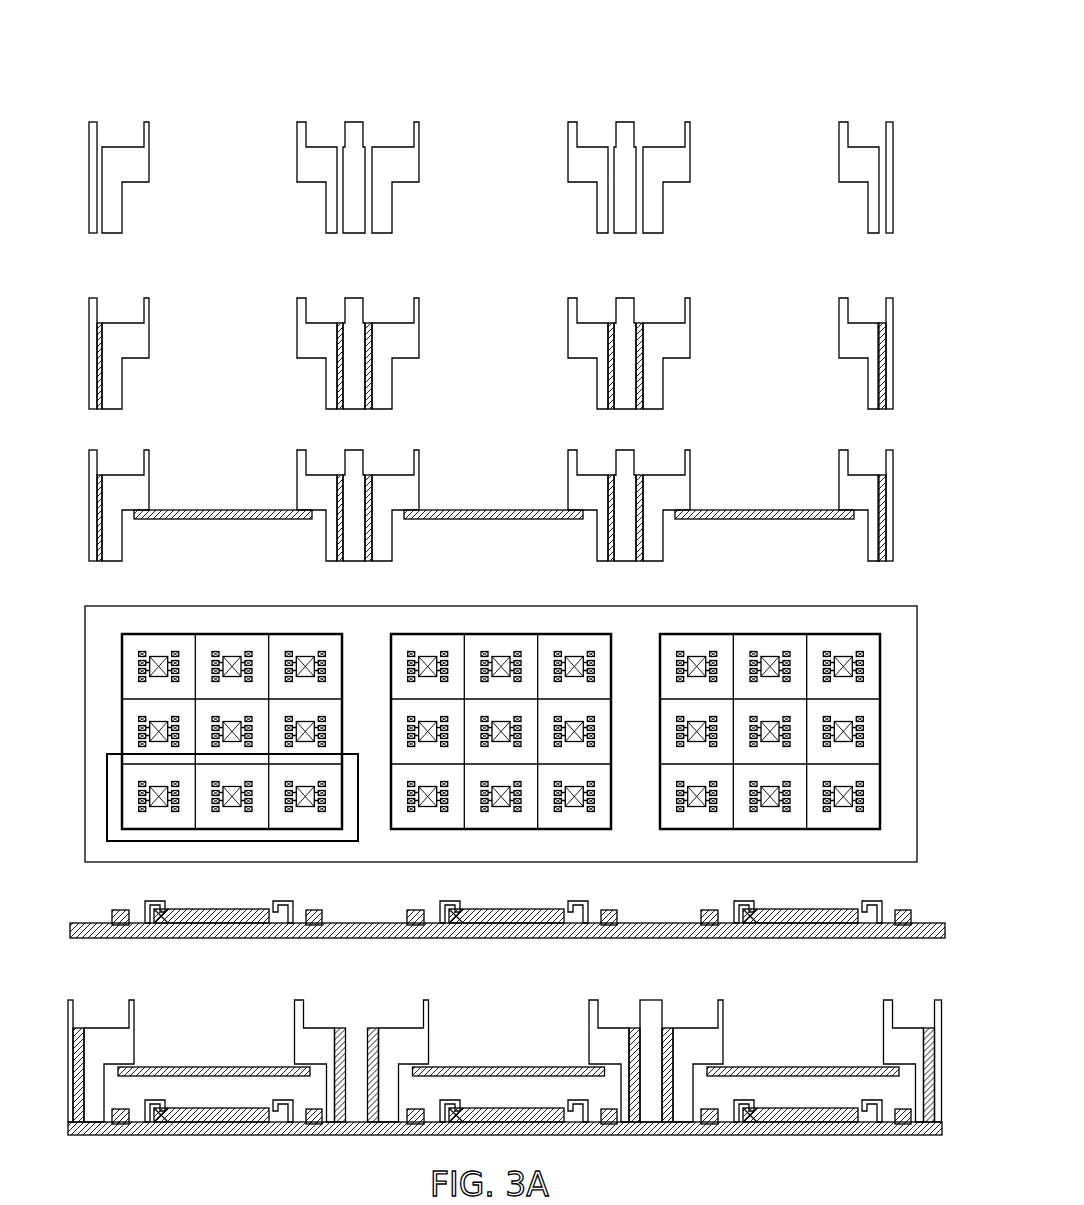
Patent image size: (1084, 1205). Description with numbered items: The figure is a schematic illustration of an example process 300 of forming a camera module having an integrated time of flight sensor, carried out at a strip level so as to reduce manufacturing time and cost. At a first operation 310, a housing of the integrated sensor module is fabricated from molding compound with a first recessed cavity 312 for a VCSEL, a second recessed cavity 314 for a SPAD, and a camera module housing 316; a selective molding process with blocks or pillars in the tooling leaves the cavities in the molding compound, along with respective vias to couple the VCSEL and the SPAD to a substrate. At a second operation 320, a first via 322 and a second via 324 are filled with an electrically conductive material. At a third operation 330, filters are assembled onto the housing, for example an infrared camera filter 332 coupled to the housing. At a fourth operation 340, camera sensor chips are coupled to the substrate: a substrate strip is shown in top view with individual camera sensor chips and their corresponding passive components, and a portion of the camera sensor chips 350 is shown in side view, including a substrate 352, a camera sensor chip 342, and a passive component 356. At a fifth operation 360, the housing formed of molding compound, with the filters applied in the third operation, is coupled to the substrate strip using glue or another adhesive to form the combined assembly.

The process 300 is at (856, 66).
The first operation 310 is at (880, 98).
The first recessed cavity 312 is at (318, 145).
The second recessed cavity 314 is at (392, 146).
The camera module housing 316 is at (623, 122).
The second operation 320 is at (880, 288).
The first via 322 is at (338, 323).
The second via 324 is at (372, 323).
The third operation 330 is at (880, 444).
The infrared camera filter 332 is at (216, 510).
The fourth operation 340 is at (880, 601).
The camera sensor chip 342 is at (162, 803).
The portion of the camera sensor chips 350 is at (110, 757).
The substrate 352 is at (128, 657).
The passive component 356 is at (318, 910).
The fifth operation 360 is at (888, 985).